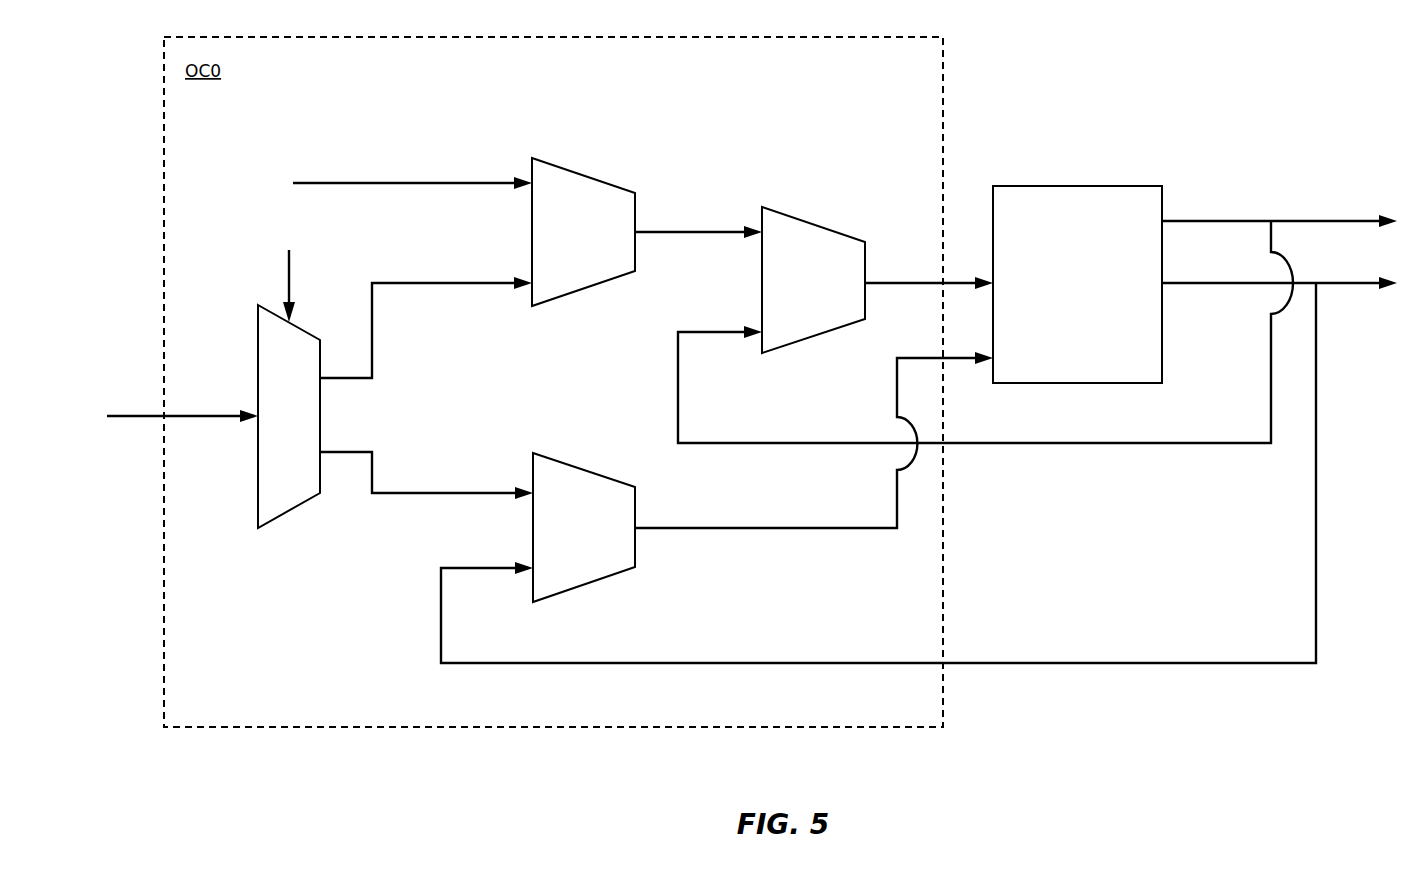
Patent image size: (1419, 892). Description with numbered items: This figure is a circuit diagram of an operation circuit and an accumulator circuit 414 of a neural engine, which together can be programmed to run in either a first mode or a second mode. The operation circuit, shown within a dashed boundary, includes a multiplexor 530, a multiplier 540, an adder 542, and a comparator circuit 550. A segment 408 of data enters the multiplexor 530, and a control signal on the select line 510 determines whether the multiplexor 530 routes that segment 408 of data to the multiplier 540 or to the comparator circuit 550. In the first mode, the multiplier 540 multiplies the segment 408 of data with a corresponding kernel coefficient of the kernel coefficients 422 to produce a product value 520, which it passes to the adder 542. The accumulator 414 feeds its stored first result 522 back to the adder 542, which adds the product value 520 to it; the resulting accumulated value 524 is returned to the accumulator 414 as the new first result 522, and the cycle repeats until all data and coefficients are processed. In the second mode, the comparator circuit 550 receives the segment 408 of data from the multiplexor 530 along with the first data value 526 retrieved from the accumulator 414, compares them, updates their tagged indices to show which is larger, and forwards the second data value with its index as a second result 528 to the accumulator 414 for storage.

The segment of data 408 is at (200, 416).
The accumulator circuit 414 is at (1077, 284).
The kernel coefficients 422 is at (423, 183).
The select line 510 is at (289, 272).
The product value 520 is at (675, 232).
The stored first result 522 is at (712, 332).
The accumulated value 524 is at (902, 283).
The first data value 526 is at (470, 568).
The second result 528 is at (685, 528).
The multiplexor 530 is at (289, 416).
The multiplier 540 is at (583, 232).
The adder 542 is at (813, 280).
The comparator circuit 550 is at (584, 527).